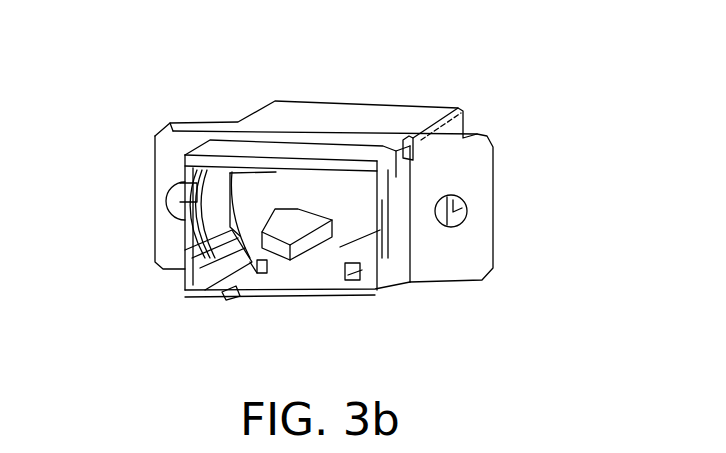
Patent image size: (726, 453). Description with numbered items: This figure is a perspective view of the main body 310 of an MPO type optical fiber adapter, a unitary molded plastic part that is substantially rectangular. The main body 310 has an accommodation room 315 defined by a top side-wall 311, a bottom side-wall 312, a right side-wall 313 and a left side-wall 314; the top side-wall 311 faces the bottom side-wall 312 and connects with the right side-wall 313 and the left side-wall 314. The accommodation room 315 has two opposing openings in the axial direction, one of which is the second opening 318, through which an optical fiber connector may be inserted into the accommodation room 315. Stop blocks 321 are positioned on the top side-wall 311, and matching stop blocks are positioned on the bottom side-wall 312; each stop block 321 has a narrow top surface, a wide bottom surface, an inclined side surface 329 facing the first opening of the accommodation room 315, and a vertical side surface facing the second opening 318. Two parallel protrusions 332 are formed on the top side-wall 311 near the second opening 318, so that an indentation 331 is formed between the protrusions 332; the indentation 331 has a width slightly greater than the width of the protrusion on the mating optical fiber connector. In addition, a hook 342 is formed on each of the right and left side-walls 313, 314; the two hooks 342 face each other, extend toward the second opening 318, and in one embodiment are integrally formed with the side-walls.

The main body 310 is at (502, 90).
The top side-wall 311 is at (255, 280).
The bottom side-wall 312 is at (217, 157).
The right side-wall 313 is at (193, 278).
The left side-wall 314 is at (377, 270).
The accommodation room 315 is at (190, 296).
The second opening 318 is at (353, 197).
The stop block 321 is at (262, 268).
The inclined side surface 329 is at (225, 297).
The indentation 331 is at (312, 252).
The protrusion 332 is at (292, 230).
The hook 342 is at (288, 178).